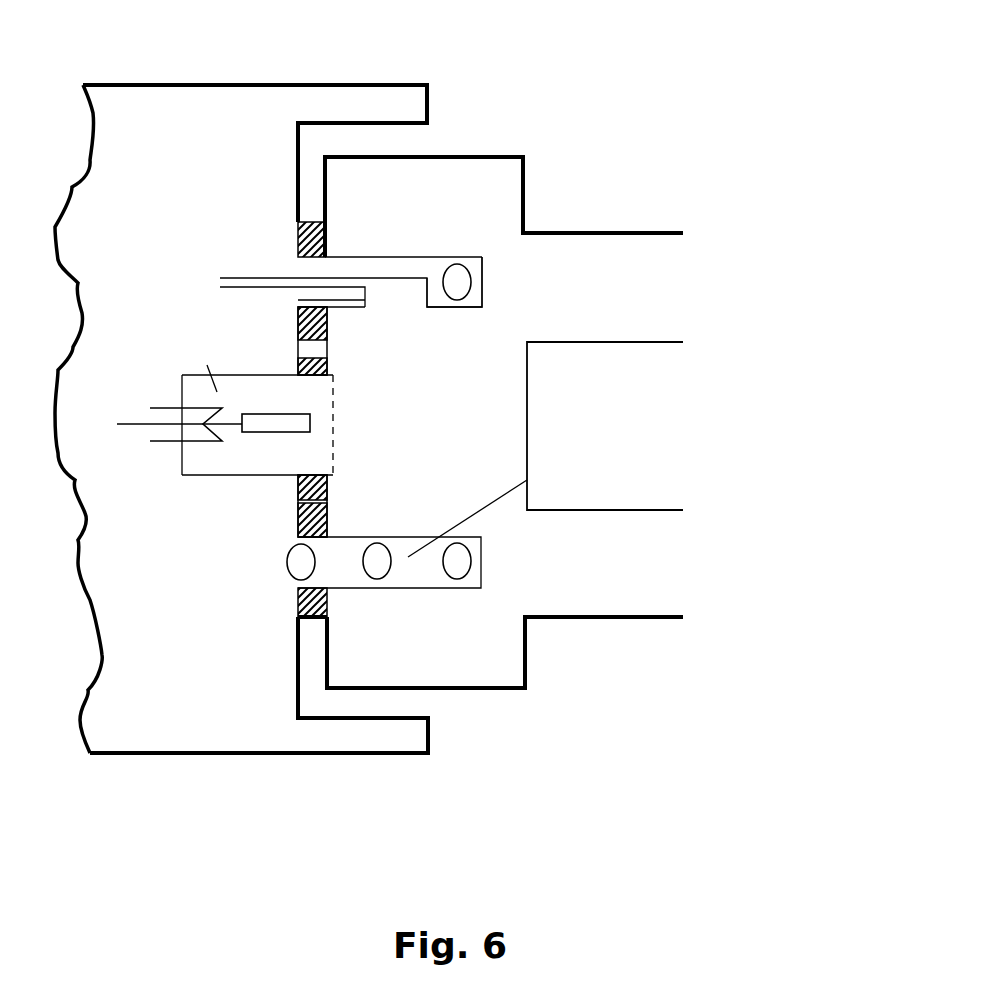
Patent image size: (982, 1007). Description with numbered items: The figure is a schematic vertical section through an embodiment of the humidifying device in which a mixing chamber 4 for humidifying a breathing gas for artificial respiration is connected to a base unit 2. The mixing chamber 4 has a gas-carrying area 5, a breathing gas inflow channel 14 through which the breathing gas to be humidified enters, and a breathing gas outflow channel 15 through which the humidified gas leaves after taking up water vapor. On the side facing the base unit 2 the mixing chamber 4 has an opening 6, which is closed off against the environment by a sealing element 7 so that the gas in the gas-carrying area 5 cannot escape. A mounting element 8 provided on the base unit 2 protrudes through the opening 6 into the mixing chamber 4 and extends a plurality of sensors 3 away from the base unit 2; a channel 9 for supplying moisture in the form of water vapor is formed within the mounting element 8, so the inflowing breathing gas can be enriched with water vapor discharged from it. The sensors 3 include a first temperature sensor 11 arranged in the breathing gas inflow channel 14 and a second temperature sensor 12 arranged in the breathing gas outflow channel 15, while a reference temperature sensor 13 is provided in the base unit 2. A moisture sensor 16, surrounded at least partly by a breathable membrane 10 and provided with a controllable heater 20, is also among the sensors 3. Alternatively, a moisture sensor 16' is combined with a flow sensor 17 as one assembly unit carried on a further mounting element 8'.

The base unit 2 is at (273, 715).
The sensor 3 is at (541, 444).
The mixing chamber 4 is at (377, 622).
The gas-carrying area 5 is at (410, 415).
The opening 6 is at (328, 255).
The sealing element 7 is at (297, 223).
The mounting element 8 is at (494, 167).
The mounting element 8' is at (555, 494).
The channel 9 is at (250, 282).
The breathable membrane 10 is at (333, 380).
The first temperature sensor 11 is at (457, 273).
The second temperature sensor 12 is at (460, 573).
The reference temperature sensor 13 is at (293, 557).
The breathing gas inflow channel 14 is at (680, 287).
The breathing gas outflow channel 15 is at (687, 555).
The moisture sensor 16 is at (225, 402).
The moisture sensor 16' is at (414, 513).
The flow sensor 17 is at (389, 517).
The controllable heater 20 is at (198, 405).